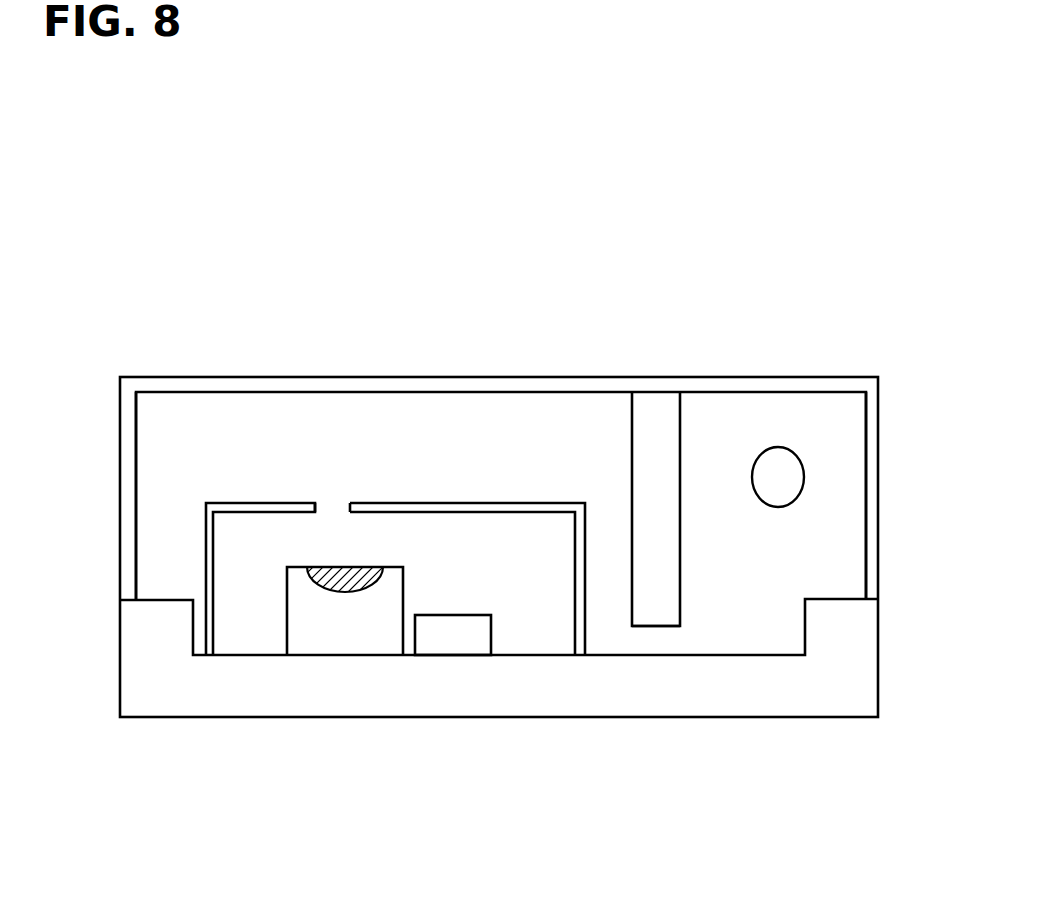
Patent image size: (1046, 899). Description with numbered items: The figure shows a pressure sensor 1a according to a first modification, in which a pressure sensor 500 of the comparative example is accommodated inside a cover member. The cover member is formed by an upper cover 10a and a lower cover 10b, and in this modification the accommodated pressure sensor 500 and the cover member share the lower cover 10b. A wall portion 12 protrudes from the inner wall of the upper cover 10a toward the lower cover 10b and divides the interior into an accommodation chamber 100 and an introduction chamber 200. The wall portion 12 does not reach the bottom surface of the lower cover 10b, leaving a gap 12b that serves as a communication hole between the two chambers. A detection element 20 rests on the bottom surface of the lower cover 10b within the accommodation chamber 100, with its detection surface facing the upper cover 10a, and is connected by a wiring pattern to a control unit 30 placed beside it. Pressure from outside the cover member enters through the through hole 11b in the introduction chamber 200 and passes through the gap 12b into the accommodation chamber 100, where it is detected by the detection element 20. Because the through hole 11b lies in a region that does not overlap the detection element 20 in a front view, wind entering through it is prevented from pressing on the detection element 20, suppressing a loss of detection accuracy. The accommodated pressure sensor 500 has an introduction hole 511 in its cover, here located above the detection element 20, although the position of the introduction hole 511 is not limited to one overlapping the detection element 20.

The pressure sensor 1a is at (157, 160).
The upper cover 10a is at (738, 377).
The lower cover 10b is at (620, 717).
The through hole 11b is at (806, 478).
The wall portion 12 is at (630, 487).
The gap 12b is at (655, 639).
The detection element 20 is at (287, 590).
The control unit 30 is at (480, 613).
The accommodation chamber 100 is at (393, 433).
The introduction chamber 200 is at (807, 433).
The pressure sensor 500 is at (402, 500).
The introduction hole 511 is at (338, 505).